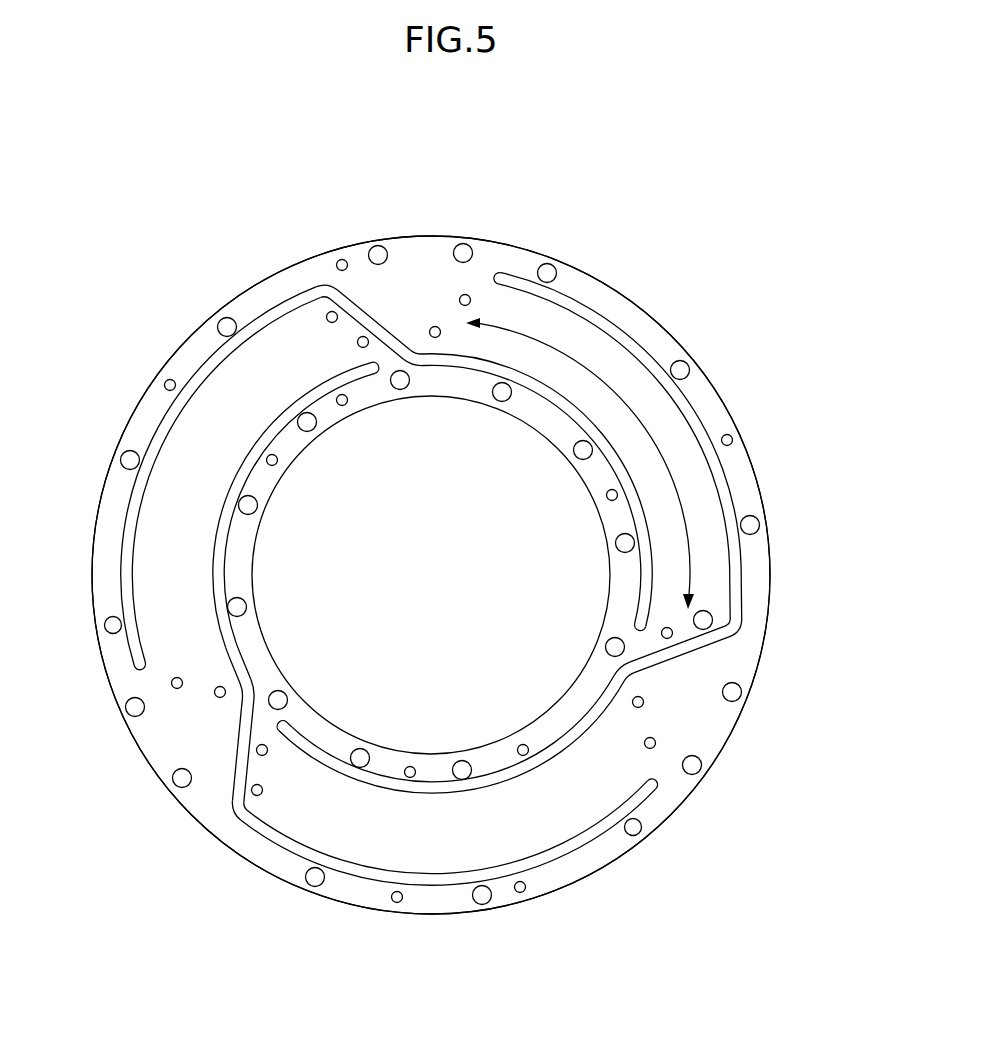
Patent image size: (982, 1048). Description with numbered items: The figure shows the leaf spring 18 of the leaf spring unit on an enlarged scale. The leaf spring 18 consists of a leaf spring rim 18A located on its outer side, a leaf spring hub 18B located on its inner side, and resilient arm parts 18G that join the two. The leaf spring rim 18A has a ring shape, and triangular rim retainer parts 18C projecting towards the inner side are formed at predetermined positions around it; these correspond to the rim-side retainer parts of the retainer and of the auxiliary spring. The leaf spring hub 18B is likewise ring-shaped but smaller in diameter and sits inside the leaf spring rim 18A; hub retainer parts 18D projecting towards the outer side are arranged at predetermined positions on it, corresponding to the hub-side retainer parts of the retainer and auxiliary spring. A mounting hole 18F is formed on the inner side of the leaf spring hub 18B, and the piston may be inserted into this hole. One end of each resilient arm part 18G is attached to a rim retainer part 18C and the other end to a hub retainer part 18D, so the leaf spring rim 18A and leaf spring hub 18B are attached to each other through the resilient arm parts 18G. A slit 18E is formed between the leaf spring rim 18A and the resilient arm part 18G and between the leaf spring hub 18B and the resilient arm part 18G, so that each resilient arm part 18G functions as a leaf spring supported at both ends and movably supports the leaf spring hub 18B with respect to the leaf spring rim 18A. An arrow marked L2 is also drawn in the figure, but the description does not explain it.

The leaf spring 18 is at (669, 159).
The leaf spring rim 18A is at (715, 410).
The leaf spring hub 18B is at (543, 743).
The rim retainer part 18C is at (452, 320).
The hub retainer part 18D is at (346, 325).
The slit 18E is at (555, 400).
The mounting hole 18F is at (613, 566).
The resilient arm part 18G is at (283, 348).
The flow direction L2 is at (580, 463).